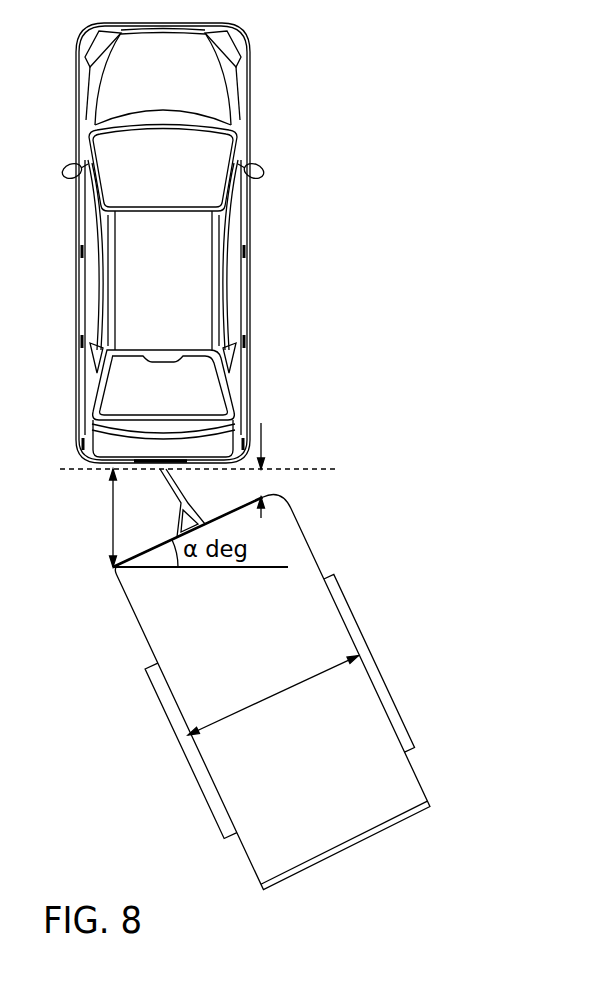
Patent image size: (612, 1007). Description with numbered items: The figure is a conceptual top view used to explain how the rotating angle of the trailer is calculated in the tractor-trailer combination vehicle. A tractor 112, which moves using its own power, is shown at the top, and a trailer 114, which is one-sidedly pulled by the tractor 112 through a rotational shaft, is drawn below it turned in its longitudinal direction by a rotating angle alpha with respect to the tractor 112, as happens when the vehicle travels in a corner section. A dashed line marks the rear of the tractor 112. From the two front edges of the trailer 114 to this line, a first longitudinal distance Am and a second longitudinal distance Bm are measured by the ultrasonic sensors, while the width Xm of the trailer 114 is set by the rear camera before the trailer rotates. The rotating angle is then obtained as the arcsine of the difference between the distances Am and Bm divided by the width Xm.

The tractor 112 is at (250, 109).
The trailer 114 is at (415, 788).
The first longitudinal distance Am is at (94, 518).
The second longitudinal distance Bm is at (279, 469).
The width of the trailer Xm is at (273, 695).